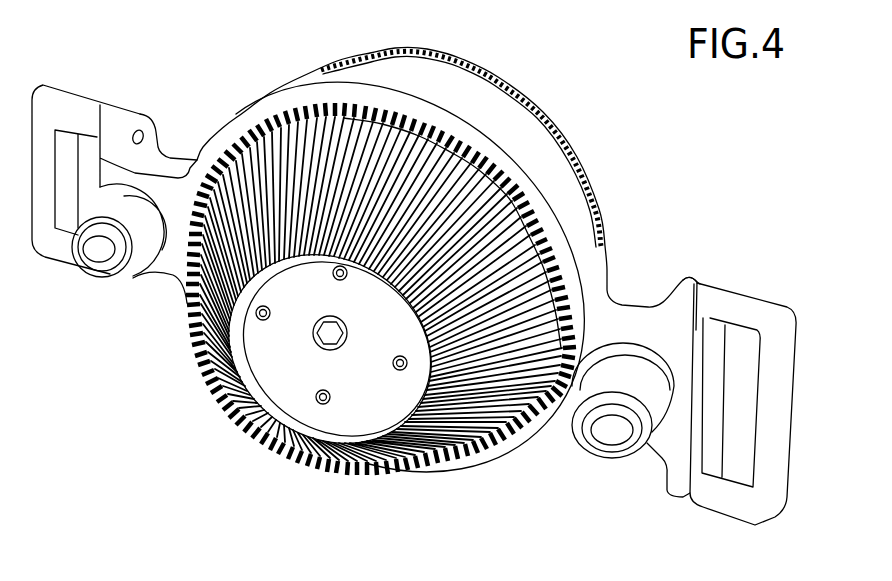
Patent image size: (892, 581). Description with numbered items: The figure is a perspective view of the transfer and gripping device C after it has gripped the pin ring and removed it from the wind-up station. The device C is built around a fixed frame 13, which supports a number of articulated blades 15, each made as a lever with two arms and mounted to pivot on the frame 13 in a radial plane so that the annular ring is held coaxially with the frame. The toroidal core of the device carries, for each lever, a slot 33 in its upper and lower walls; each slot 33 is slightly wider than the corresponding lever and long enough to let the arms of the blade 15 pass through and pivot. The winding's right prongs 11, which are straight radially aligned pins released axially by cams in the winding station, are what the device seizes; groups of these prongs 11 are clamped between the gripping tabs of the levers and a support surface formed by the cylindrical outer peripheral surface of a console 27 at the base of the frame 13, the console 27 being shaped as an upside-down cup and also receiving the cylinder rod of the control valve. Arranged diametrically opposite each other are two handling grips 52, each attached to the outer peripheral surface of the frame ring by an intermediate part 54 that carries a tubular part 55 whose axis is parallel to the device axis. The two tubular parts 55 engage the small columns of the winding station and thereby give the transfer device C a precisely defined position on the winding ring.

The right prongs 11 is at (268, 430).
The fixed frame 13 is at (607, 237).
The articulated blades 15 is at (405, 162).
The console 27 is at (330, 349).
The slot 33 is at (518, 142).
The handling grips 52 is at (767, 323).
The intermediate part 54 is at (683, 317).
The tubular part 55 is at (132, 218).
The transfer device C is at (553, 107).